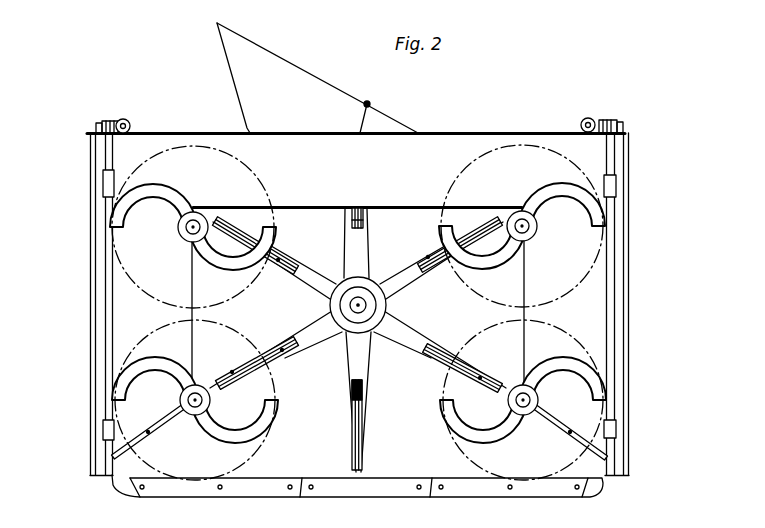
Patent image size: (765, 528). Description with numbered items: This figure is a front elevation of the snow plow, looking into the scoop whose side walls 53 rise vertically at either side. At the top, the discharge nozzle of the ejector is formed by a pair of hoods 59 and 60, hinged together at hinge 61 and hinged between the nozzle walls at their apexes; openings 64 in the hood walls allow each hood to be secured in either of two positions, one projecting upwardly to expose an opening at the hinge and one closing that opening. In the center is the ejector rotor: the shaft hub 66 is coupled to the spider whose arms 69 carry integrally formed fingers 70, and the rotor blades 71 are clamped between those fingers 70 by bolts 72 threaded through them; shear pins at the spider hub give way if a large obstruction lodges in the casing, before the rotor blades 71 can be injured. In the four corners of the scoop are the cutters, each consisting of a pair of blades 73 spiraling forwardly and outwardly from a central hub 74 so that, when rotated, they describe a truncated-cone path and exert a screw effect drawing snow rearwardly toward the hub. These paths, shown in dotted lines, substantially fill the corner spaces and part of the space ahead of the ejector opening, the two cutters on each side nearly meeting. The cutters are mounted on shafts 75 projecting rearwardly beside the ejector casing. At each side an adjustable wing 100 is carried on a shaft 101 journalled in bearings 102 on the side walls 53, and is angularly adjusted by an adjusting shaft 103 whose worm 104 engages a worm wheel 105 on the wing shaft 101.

The side walls 53 is at (386, 313).
The hood 59 is at (304, 62).
The hood 60 is at (411, 129).
The hinge 61 is at (370, 104).
The openings 64 is at (268, 85).
The shaft hub 66 is at (387, 306).
The spider arms 69 is at (368, 250).
The fingers 70 is at (364, 212).
The rotor blades 71 is at (505, 382).
The bolts 72 is at (352, 215).
The blades 73 is at (188, 195).
The central hub 74 is at (212, 215).
The shafts 75 is at (178, 249).
The adjustable wing 100 is at (90, 270).
The shaft 101 is at (103, 432).
The bearings 102 is at (133, 178).
The adjusting shaft 103 is at (131, 128).
The worm 104 is at (125, 119).
The worm wheel 105 is at (100, 127).